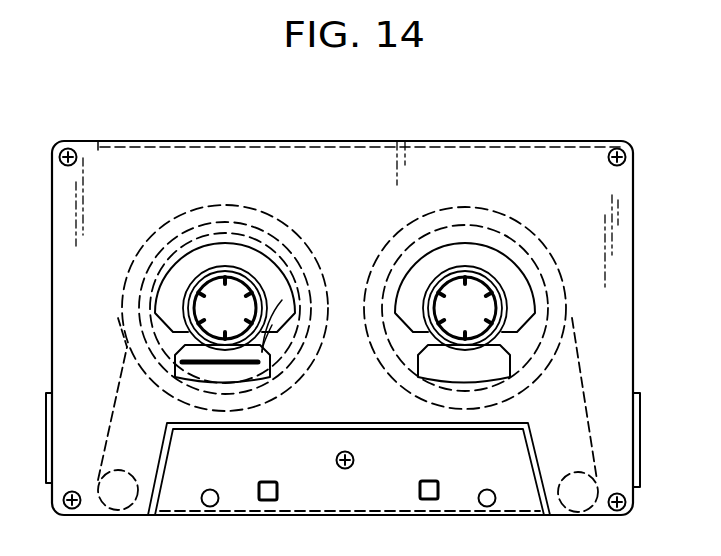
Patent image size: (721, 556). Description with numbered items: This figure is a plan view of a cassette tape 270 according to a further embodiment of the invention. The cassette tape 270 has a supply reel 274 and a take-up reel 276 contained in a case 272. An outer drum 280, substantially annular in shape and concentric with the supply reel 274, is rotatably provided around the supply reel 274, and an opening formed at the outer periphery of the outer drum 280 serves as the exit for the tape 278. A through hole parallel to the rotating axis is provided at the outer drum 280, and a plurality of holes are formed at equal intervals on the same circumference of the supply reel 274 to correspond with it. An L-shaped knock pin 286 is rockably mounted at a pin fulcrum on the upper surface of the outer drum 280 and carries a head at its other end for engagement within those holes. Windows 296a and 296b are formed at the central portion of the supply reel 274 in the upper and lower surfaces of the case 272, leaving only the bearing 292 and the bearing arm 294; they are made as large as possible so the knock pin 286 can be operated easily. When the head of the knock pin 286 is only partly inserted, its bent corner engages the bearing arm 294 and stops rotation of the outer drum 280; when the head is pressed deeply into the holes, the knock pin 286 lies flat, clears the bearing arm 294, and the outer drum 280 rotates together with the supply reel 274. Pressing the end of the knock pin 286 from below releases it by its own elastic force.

The cassette tape 270 is at (133, 141).
The case 272 is at (366, 147).
The supply reel 274 is at (160, 252).
The take-up reel 276 is at (548, 256).
The tape 278 is at (313, 230).
The outer drum 280 is at (118, 318).
The knock pin 286 is at (242, 364).
The bearing 292 is at (282, 300).
The bearing arm 294 is at (262, 352).
The window 296a is at (268, 358).
The window 296b is at (272, 325).